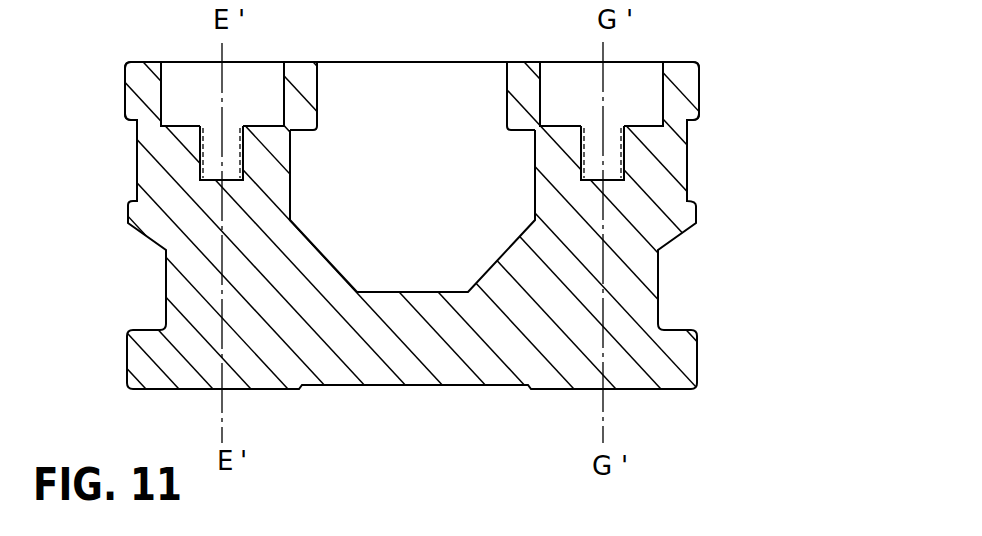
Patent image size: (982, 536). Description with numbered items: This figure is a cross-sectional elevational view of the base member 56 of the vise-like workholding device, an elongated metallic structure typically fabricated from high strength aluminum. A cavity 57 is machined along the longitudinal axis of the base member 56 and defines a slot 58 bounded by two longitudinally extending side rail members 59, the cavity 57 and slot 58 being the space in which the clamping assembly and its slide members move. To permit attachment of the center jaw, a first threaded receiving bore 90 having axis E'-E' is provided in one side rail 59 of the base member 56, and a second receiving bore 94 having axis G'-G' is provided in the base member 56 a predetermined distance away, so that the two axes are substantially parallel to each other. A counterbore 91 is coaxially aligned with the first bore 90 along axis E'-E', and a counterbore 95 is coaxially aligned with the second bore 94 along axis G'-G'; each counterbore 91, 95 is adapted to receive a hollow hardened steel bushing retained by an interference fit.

The base member 56 is at (442, 361).
The cavity 57 is at (432, 215).
The slot 58 is at (427, 112).
The side rail members 59 is at (141, 73).
The first threaded receiving bore 90 is at (212, 165).
The counterbore 91 is at (160, 101).
The second receiving bore 94 is at (612, 166).
The counterbore 95 is at (698, 105).